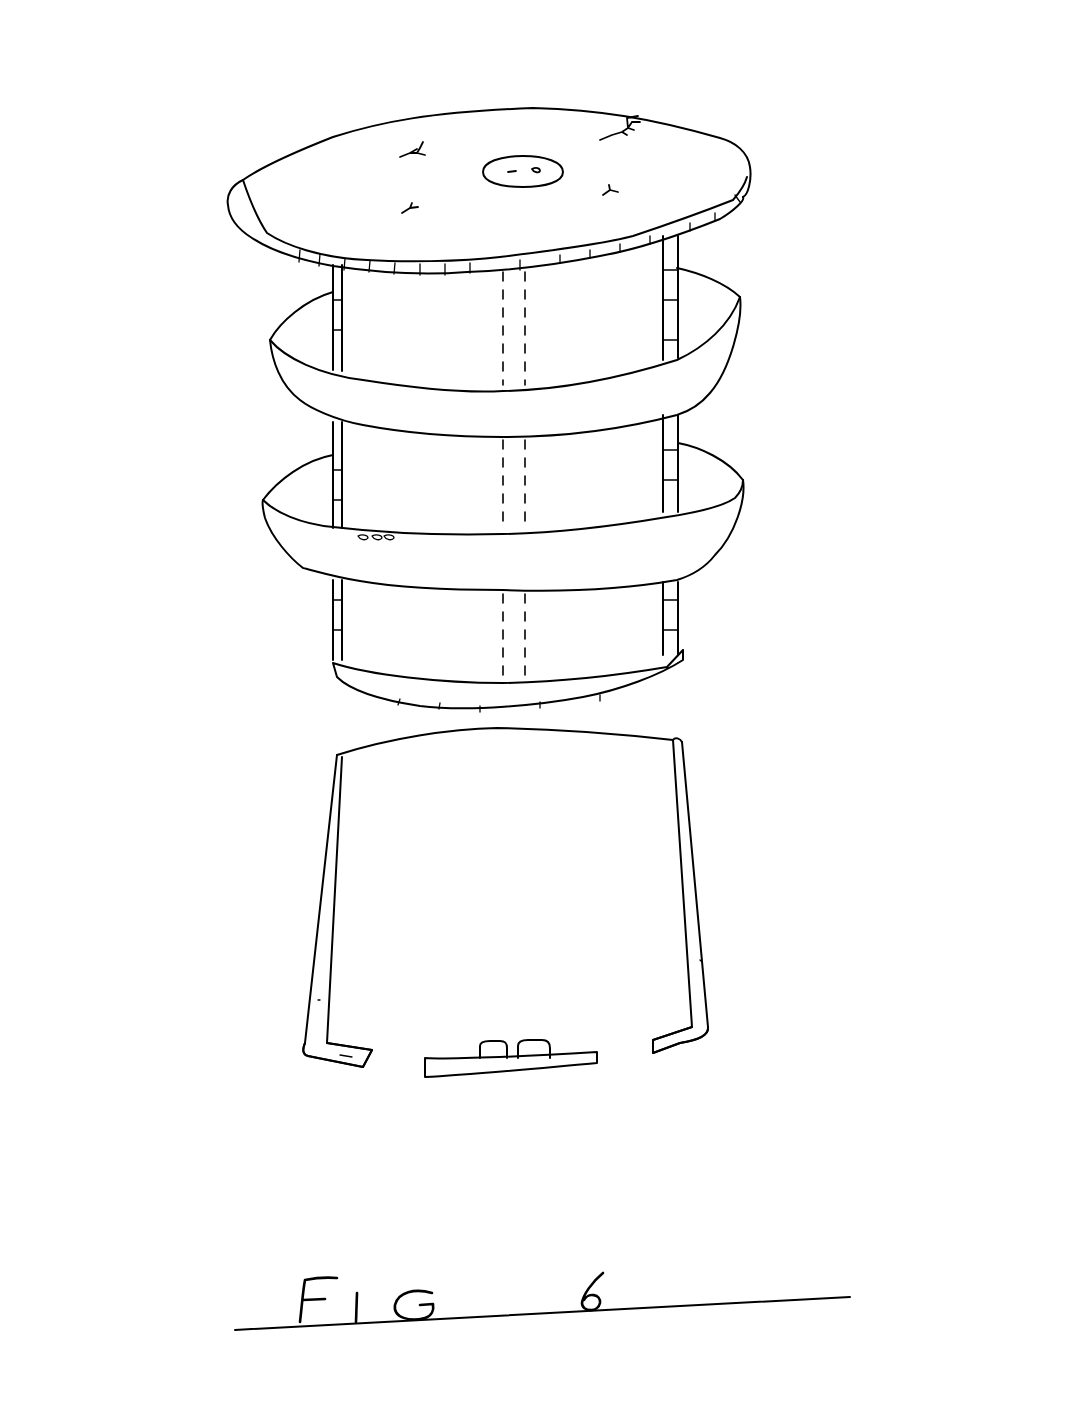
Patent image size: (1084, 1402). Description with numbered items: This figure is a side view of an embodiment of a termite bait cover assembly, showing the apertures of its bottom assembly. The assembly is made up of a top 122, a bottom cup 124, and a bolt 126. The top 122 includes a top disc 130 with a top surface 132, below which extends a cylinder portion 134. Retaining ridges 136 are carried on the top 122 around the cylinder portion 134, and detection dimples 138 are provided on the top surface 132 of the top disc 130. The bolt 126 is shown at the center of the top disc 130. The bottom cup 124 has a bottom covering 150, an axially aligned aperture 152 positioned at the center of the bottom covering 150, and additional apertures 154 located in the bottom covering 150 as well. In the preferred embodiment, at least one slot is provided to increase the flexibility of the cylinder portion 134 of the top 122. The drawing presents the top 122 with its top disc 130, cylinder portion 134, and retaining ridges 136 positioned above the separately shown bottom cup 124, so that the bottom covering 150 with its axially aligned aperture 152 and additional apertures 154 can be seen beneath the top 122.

The top 122 is at (875, 365).
The bottom cup 124 is at (848, 860).
The bolt 126 is at (523, 165).
The top disc 130 is at (262, 165).
The top surface 132 is at (333, 157).
The cylinder portion 134 is at (168, 427).
The retaining ridges 136 is at (270, 335).
The detection dimples 138 is at (420, 150).
The bottom covering 150 is at (757, 1100).
The axially aligned aperture 152 is at (517, 1045).
The additional apertures 154 is at (395, 1065).